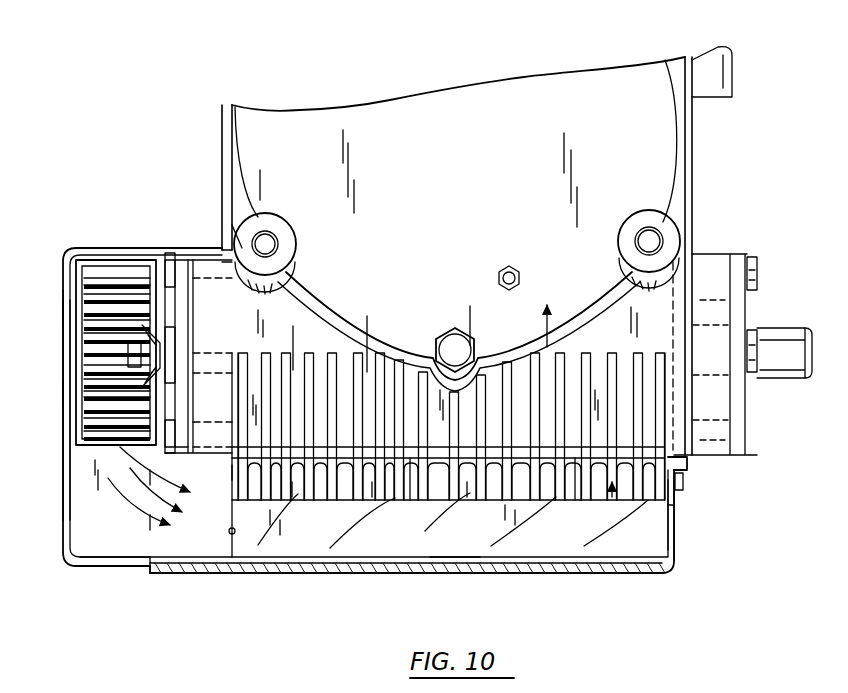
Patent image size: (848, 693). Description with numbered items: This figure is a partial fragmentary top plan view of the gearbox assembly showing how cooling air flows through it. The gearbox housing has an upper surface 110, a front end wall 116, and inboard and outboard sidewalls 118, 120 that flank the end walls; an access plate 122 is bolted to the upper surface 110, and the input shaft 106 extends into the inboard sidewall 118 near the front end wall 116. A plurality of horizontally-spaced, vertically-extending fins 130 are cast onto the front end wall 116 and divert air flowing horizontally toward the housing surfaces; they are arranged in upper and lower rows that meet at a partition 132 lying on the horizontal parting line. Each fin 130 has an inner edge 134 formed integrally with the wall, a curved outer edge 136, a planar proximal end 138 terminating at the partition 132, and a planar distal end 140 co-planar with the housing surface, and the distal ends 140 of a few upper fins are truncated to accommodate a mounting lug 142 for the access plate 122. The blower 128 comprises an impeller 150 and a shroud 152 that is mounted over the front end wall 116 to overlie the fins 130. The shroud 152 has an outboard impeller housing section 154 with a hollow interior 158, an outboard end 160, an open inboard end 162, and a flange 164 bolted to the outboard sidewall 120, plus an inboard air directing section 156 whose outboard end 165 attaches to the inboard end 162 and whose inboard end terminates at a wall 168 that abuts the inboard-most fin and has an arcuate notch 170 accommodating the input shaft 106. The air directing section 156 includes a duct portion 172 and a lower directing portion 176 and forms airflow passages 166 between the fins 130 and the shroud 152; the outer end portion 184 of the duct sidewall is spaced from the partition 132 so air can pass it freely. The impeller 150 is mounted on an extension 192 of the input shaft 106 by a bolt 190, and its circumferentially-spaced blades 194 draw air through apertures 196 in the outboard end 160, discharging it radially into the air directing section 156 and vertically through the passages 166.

The input shaft 106 is at (790, 331).
The upper surface 110 is at (692, 83).
The front end wall 116 is at (320, 364).
The inboard sidewall 118 is at (694, 153).
The outboard sidewall 120 is at (222, 113).
The access plate 122 is at (453, 142).
The blower 128 is at (114, 588).
The fins 130 is at (410, 503).
The partition 132 is at (581, 462).
The inner edge 134 is at (270, 353).
The outer edge 136 is at (236, 500).
The planar proximal end 138 is at (690, 418).
The planar distal end 140 is at (238, 472).
The mounting lug 142 is at (490, 358).
The impeller 150 is at (110, 262).
The shroud 152 is at (56, 433).
The impeller housing section 154 is at (56, 392).
The air directing section 156 is at (695, 521).
The hollow interior 158 is at (128, 544).
The outboard end 160 is at (65, 538).
The open inboard end 162 is at (233, 538).
The flange 164 is at (230, 240).
The outboard end 165 is at (150, 570).
The airflow passages 166 is at (321, 500).
The wall 168 is at (675, 506).
The arcuate notch 170 is at (688, 459).
The duct portion 172 is at (446, 578).
The lower directing portion 176 is at (392, 545).
The outer end portion 184 is at (621, 575).
The bolt 190 is at (128, 350).
The extension 192 is at (175, 330).
The blades 194 is at (93, 262).
The apertures 196 is at (63, 305).